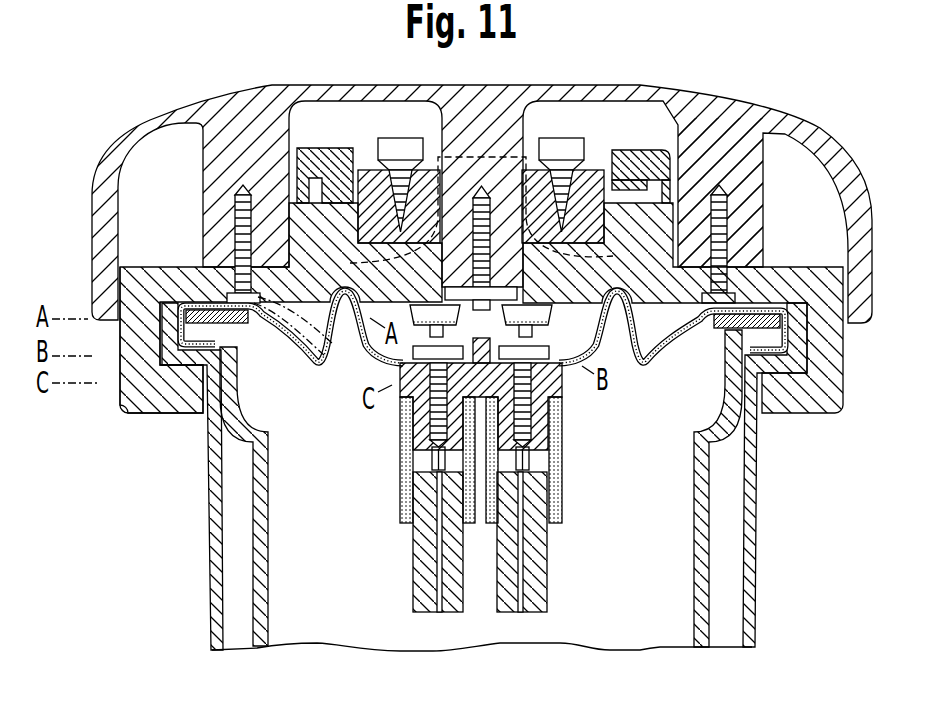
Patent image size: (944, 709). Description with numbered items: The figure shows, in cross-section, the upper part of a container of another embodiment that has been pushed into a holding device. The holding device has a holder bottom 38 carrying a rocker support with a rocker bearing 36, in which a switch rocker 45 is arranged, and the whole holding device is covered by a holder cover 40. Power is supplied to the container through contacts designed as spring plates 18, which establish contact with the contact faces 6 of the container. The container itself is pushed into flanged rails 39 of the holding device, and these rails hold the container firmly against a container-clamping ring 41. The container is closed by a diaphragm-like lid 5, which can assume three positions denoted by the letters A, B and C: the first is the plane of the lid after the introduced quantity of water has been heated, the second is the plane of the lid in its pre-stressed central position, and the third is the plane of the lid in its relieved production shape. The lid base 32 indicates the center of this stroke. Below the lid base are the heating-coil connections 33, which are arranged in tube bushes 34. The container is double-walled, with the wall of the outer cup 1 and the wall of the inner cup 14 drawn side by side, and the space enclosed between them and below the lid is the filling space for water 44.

The holder cover 40 is at (237, 147).
The holder bottom 38 is at (317, 227).
The switch rocker 45 is at (480, 155).
The rocker bearing 36 is at (650, 218).
The container-clamping ring 41 is at (760, 313).
The spring plates 18 is at (363, 260).
The contact faces 6 is at (540, 357).
The diaphragm-like lid 5 is at (666, 334).
The lid base 32 is at (470, 375).
The filling space for water 44 is at (638, 481).
The tube bushes 34 is at (398, 513).
The heating-coil connections 33 is at (427, 597).
The wall of the outer cup 1 is at (213, 593).
The wall of the inner cup 14 is at (266, 606).
The flanged rails 39 is at (152, 393).